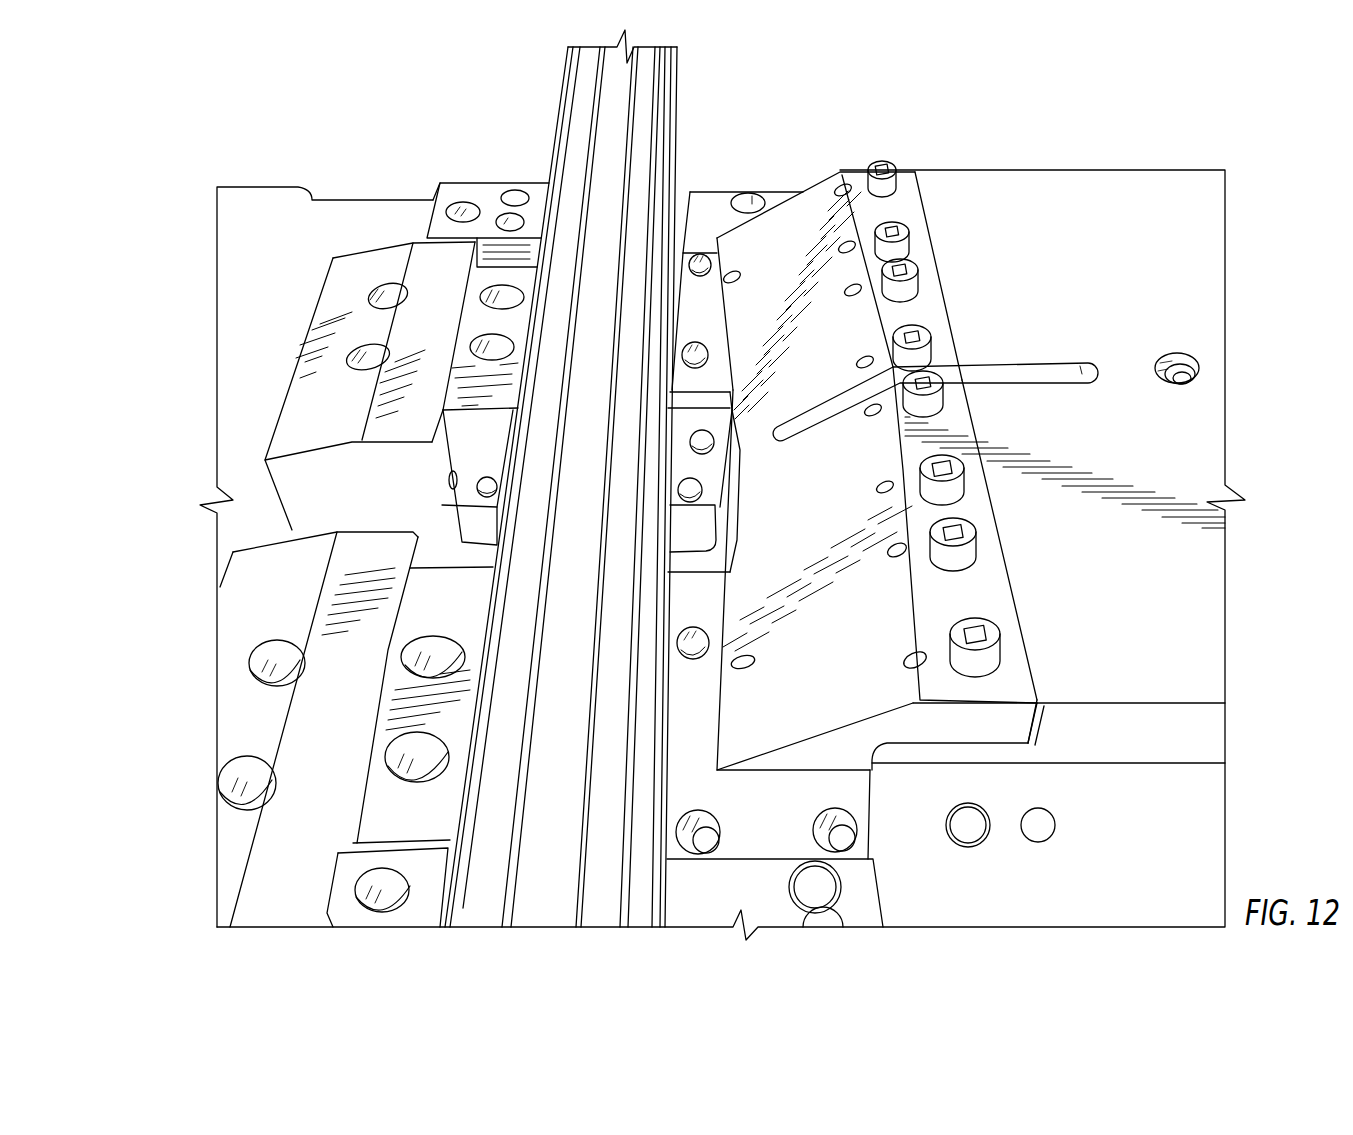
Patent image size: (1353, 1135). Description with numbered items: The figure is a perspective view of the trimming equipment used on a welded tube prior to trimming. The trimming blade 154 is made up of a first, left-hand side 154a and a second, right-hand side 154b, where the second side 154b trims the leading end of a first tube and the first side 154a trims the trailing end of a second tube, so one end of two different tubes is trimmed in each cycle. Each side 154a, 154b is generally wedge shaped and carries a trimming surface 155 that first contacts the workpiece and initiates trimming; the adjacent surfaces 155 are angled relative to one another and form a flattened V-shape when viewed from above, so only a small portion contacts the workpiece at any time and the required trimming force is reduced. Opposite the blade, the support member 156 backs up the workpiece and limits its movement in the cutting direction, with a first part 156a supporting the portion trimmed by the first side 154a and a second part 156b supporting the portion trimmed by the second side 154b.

The trimming blade 154 is at (858, 754).
The first side 154a is at (830, 517).
The second side 154b is at (848, 351).
The trimming surface 155 is at (722, 303).
The support member 156 is at (343, 578).
The first part 156a is at (397, 720).
The second part 156b is at (480, 317).